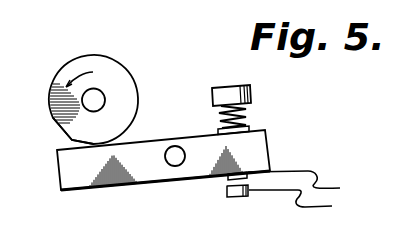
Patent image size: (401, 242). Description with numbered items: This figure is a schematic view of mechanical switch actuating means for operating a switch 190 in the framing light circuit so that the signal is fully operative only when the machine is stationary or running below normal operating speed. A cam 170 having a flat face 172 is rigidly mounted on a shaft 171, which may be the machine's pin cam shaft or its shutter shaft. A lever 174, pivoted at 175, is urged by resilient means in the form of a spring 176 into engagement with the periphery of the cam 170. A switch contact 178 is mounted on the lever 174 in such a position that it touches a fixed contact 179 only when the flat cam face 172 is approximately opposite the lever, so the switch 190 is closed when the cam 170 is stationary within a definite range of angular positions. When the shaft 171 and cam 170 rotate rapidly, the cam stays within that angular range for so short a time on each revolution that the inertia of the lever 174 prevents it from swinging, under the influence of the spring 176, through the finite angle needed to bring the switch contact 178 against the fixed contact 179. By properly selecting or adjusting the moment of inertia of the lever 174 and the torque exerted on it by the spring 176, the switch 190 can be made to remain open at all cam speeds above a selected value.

The cam 170 is at (113, 67).
The shaft 171 is at (97, 100).
The flat cam face 172 is at (69, 131).
The lever 174 is at (95, 188).
The pivot 175 is at (172, 161).
The spring 176 is at (245, 118).
The switch contact 178 is at (229, 174).
The fixed contact 179 is at (232, 197).
The switch 190 is at (223, 196).